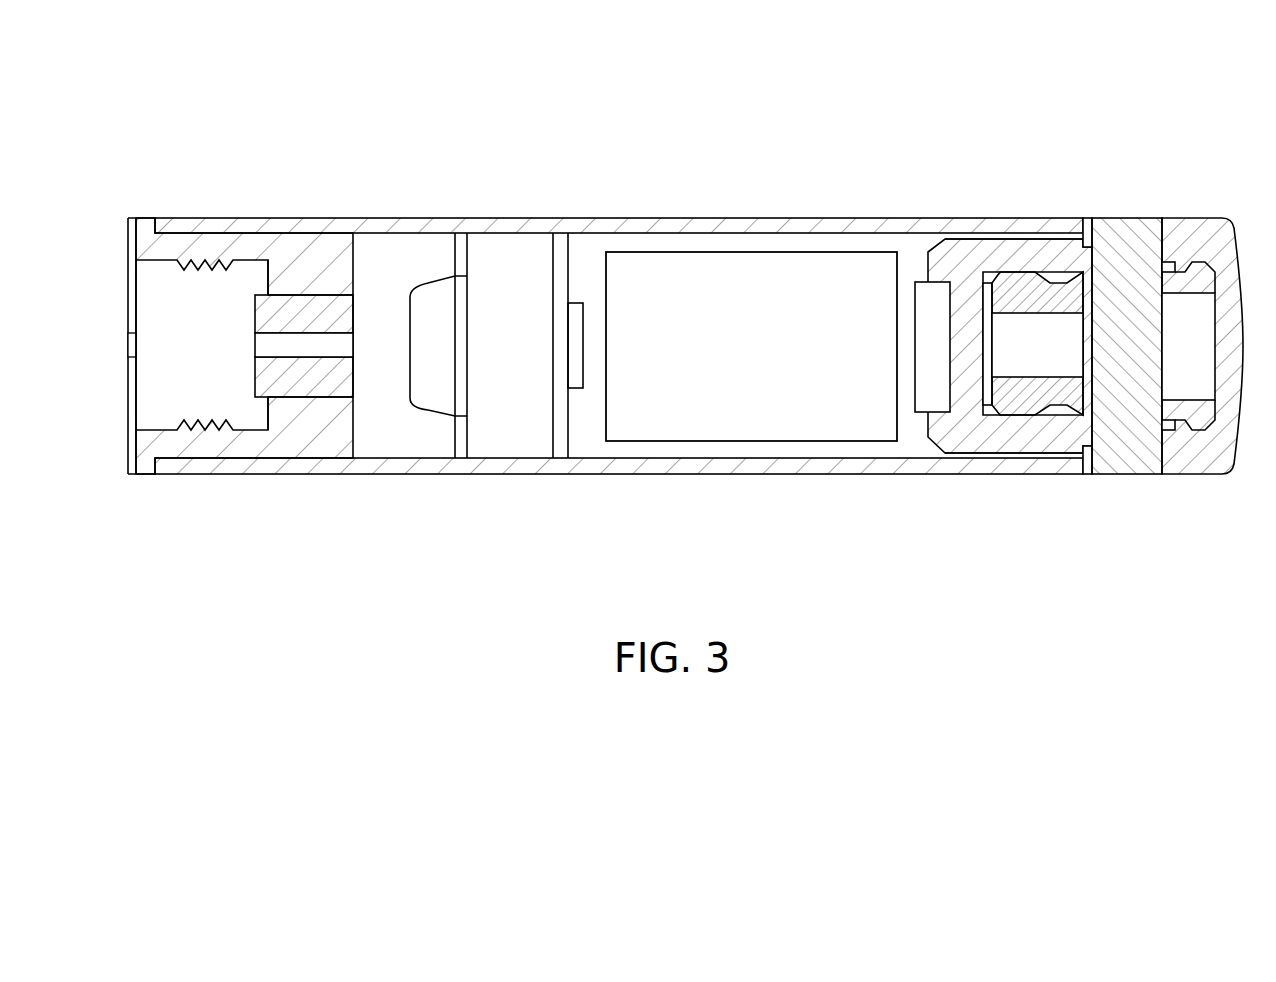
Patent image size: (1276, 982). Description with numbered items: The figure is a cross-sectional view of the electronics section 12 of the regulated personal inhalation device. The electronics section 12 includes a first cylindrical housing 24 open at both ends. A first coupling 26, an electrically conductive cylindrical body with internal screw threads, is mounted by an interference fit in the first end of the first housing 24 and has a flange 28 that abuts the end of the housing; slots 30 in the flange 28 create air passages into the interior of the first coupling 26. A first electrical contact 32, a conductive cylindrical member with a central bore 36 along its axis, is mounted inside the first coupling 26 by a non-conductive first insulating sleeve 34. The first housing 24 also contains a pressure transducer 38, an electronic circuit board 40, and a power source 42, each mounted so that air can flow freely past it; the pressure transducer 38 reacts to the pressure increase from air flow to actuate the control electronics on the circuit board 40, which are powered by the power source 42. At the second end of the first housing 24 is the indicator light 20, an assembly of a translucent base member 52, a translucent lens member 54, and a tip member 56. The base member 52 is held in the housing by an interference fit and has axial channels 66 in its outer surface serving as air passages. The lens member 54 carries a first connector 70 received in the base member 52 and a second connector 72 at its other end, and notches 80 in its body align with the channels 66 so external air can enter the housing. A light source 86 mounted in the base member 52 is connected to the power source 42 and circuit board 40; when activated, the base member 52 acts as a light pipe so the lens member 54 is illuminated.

The electronics section 12 is at (742, 132).
The indicator light 20 is at (1132, 208).
The first cylindrical housing 24 is at (515, 227).
The first coupling 26 is at (310, 243).
The flange 28 is at (148, 463).
The slots 30 is at (132, 462).
The first electrical contact 32 is at (262, 381).
The first insulating sleeve 34 is at (275, 278).
The central bore 36 is at (268, 345).
The pressure transducer 38 is at (422, 316).
The electronic circuit board 40 is at (573, 344).
The power source 42 is at (770, 358).
The base member 52 is at (975, 437).
The lens member 54 is at (1128, 461).
The tip member 56 is at (1212, 460).
The channels 66 is at (1013, 237).
The first connector 70 is at (1037, 391).
The second connector 72 is at (1193, 405).
The notches 80 is at (1086, 224).
The light source 86 is at (932, 292).